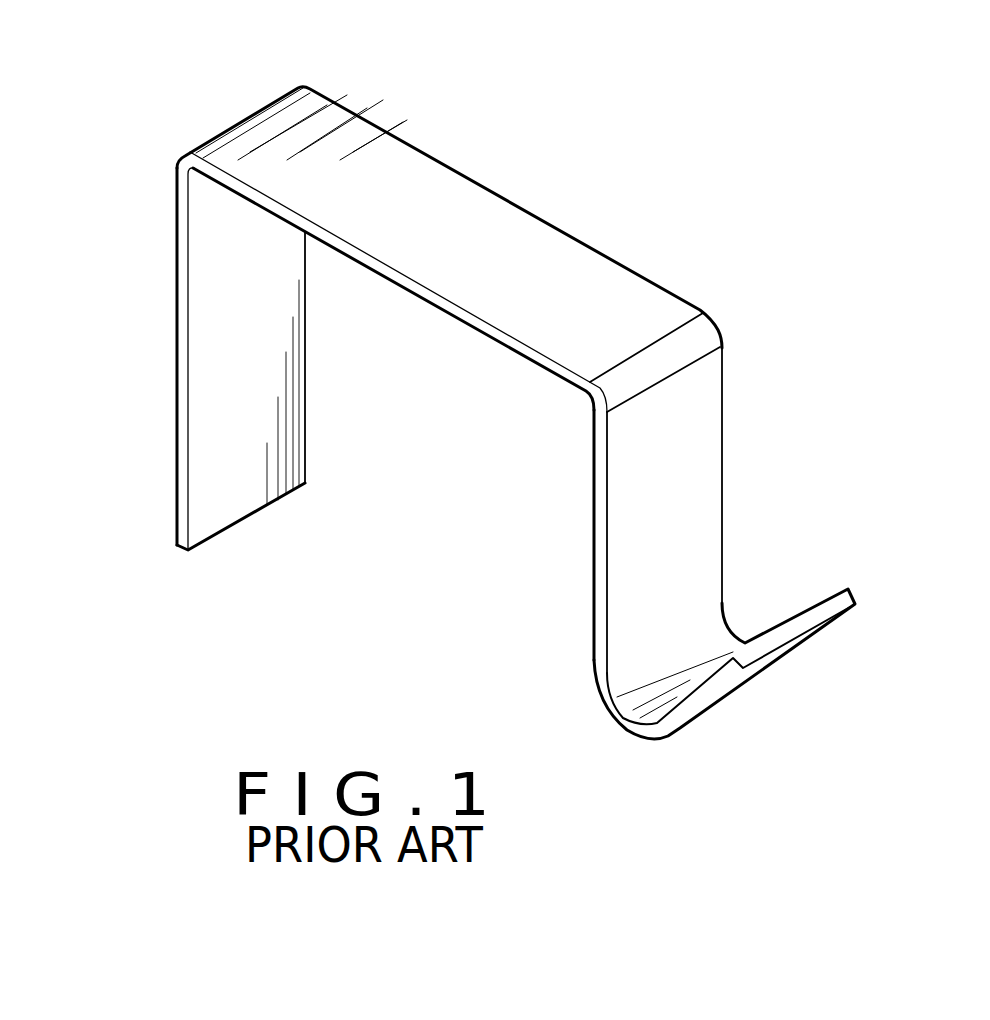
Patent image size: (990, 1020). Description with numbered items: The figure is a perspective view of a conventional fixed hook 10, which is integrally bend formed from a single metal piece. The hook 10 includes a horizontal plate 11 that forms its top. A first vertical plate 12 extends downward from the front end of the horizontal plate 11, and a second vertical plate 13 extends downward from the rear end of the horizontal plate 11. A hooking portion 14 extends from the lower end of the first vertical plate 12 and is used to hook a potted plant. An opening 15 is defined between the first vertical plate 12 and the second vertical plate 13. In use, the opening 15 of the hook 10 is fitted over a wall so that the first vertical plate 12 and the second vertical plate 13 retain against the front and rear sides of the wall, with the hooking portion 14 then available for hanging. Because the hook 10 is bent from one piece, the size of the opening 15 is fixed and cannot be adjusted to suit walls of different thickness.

The fixed hook 10 is at (507, 389).
The horizontal plate 11 is at (445, 190).
The first vertical plate 12 is at (705, 470).
The second vertical plate 13 is at (212, 323).
The hooking portion 14 is at (793, 657).
The opening 15 is at (442, 407).